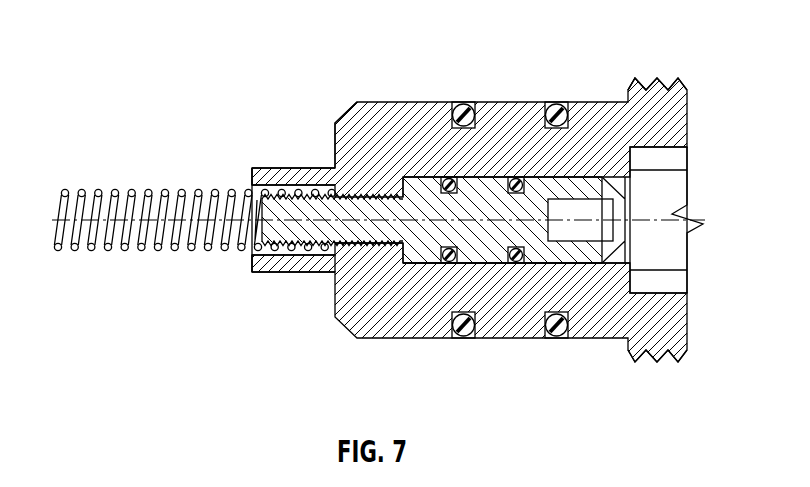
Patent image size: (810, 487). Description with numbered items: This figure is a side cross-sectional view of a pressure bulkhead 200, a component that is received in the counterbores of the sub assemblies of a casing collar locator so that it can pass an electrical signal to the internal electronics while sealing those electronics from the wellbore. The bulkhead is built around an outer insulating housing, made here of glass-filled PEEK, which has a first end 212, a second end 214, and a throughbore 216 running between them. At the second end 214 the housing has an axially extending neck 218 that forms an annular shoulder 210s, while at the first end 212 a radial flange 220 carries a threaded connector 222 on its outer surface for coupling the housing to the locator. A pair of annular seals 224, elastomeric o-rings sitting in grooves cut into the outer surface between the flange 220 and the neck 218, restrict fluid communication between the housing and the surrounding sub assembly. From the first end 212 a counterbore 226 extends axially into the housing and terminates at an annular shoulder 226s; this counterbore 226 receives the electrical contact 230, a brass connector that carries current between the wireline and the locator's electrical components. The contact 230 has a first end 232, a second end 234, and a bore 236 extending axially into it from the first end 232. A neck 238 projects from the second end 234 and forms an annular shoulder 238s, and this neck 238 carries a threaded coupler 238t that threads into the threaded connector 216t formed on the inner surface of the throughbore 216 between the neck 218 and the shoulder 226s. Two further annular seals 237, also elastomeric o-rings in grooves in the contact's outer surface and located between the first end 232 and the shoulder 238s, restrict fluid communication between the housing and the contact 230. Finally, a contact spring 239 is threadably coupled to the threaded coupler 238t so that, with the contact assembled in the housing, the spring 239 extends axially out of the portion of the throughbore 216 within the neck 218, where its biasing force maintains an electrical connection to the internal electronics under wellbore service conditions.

The pressure bulkhead 200 is at (120, 60).
The contact spring 239 is at (136, 189).
The second end 234 is at (253, 230).
The second end 214 is at (252, 172).
The neck 218 is at (300, 168).
The throughbore 216 is at (300, 258).
The threaded connector 216t is at (332, 270).
The annular shoulder 210s is at (334, 128).
The counterbore 226 is at (386, 264).
The annular shoulder 226s is at (356, 246).
The electrical contact 230 is at (556, 266).
The radial flange 220 is at (689, 90).
The threaded connector 222 is at (639, 80).
The first end 212 is at (690, 135).
The annular seals 224 is at (560, 104).
The annular seals 237 is at (517, 263).
The neck 238 is at (382, 210).
The threaded coupler 238t is at (390, 192).
The annular shoulder 238s is at (406, 189).
The bore 236 is at (550, 208).
The first end 232 is at (612, 254).